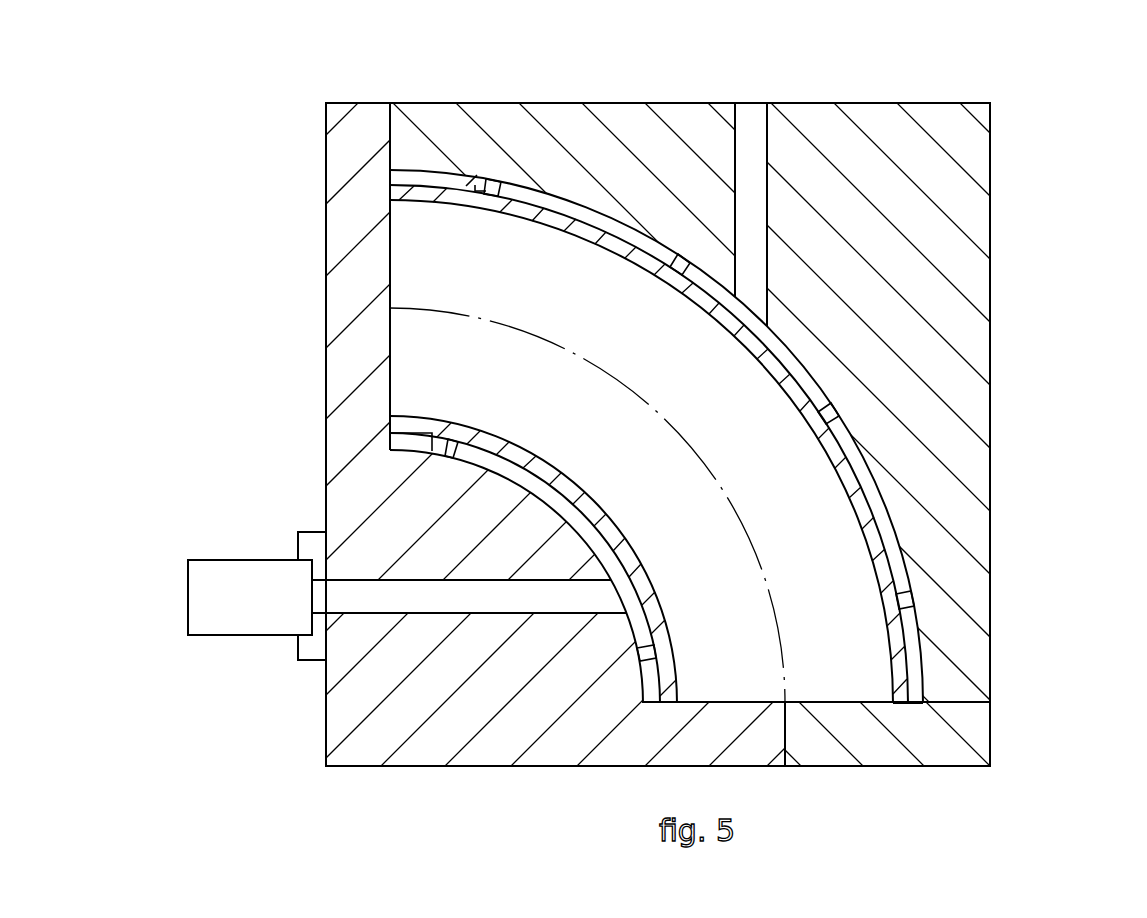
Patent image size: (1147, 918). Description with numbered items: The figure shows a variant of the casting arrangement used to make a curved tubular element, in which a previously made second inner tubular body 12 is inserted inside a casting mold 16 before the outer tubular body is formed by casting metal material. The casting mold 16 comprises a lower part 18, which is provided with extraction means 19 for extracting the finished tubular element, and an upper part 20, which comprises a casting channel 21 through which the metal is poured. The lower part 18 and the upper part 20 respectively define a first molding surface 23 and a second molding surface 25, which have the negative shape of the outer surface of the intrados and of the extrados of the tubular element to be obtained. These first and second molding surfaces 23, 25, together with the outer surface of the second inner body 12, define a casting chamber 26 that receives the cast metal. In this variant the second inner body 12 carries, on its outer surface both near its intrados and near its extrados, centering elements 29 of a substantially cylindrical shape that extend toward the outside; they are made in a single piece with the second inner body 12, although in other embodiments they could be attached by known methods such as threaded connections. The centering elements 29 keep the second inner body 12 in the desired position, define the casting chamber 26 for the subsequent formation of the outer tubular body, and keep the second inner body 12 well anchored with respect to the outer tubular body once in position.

The second inner tubular body 12 is at (560, 220).
The casting mold 16 is at (1058, 270).
The lower part 18 is at (340, 257).
The extraction means 19 is at (233, 580).
The upper part 20 is at (885, 135).
The casting channel 21 is at (737, 116).
The first molding surface 23 is at (398, 444).
The second molding surface 25 is at (917, 657).
The casting chamber 26 is at (463, 184).
The centering elements 29 is at (493, 185).